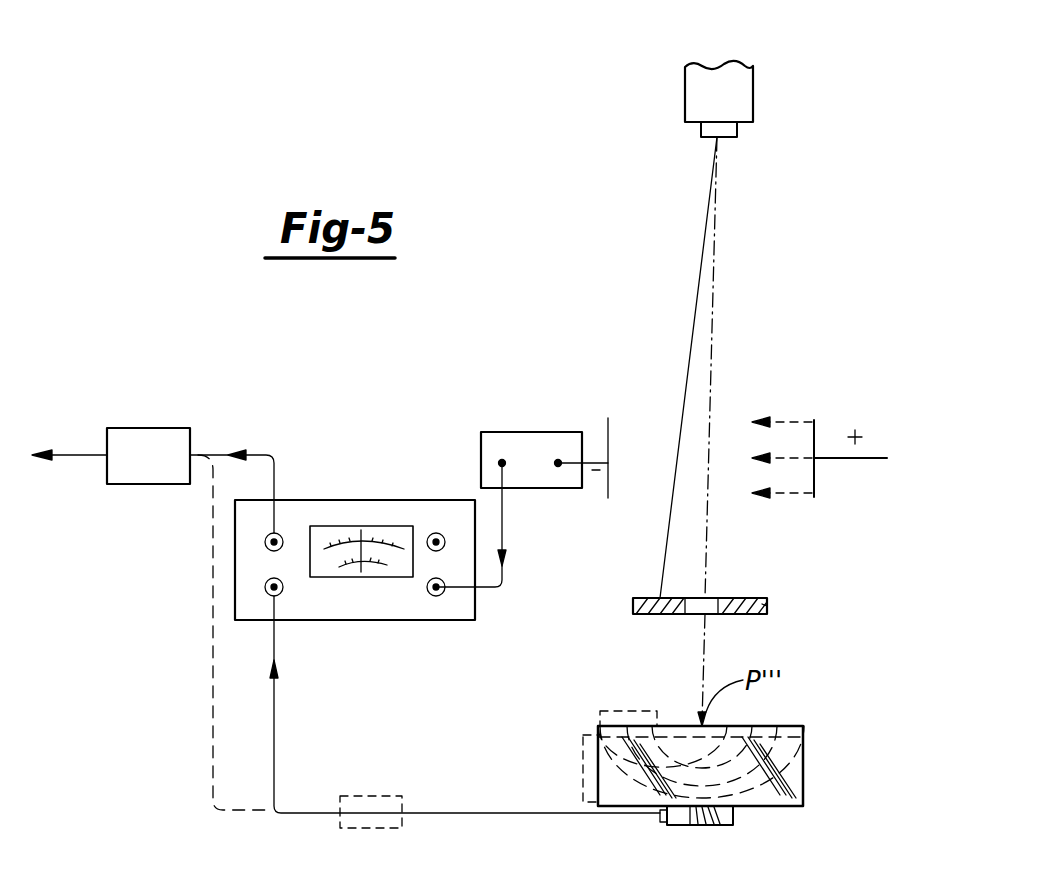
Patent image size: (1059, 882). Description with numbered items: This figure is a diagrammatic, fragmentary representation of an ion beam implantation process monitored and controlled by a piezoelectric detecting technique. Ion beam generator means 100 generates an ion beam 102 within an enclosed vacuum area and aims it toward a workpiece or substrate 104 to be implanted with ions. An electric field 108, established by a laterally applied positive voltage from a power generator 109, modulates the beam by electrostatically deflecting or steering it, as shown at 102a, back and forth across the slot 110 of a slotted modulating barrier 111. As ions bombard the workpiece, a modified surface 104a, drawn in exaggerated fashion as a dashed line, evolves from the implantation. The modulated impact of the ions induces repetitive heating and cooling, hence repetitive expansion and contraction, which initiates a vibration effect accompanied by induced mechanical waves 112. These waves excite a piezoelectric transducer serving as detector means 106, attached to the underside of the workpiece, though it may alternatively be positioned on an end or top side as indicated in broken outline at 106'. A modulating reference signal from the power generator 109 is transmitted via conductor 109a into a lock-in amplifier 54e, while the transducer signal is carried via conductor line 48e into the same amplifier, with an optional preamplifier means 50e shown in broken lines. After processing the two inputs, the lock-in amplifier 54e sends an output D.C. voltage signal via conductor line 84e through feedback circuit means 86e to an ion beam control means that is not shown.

The ion beam generator means 100 is at (685, 90).
The ion beam 102 is at (712, 320).
The deflected ion beam 102a is at (692, 322).
The workpiece 104 is at (800, 767).
The modified surface 104a is at (788, 727).
The detector means 106 is at (747, 834).
The alternative transducer position 106' is at (593, 739).
The electric field 108 is at (818, 383).
The power generator 109 is at (580, 392).
The conductor 109a is at (503, 533).
The slot 110 is at (712, 603).
The slotted modulating barrier 111 is at (764, 606).
The induced mechanical waves 112 is at (600, 775).
The lock-in amplifier 54e is at (462, 478).
The conductor line 84e is at (258, 455).
The feedback circuit means 86e is at (128, 433).
The conductor line 48e is at (505, 768).
The preamplifier means 50e is at (412, 752).